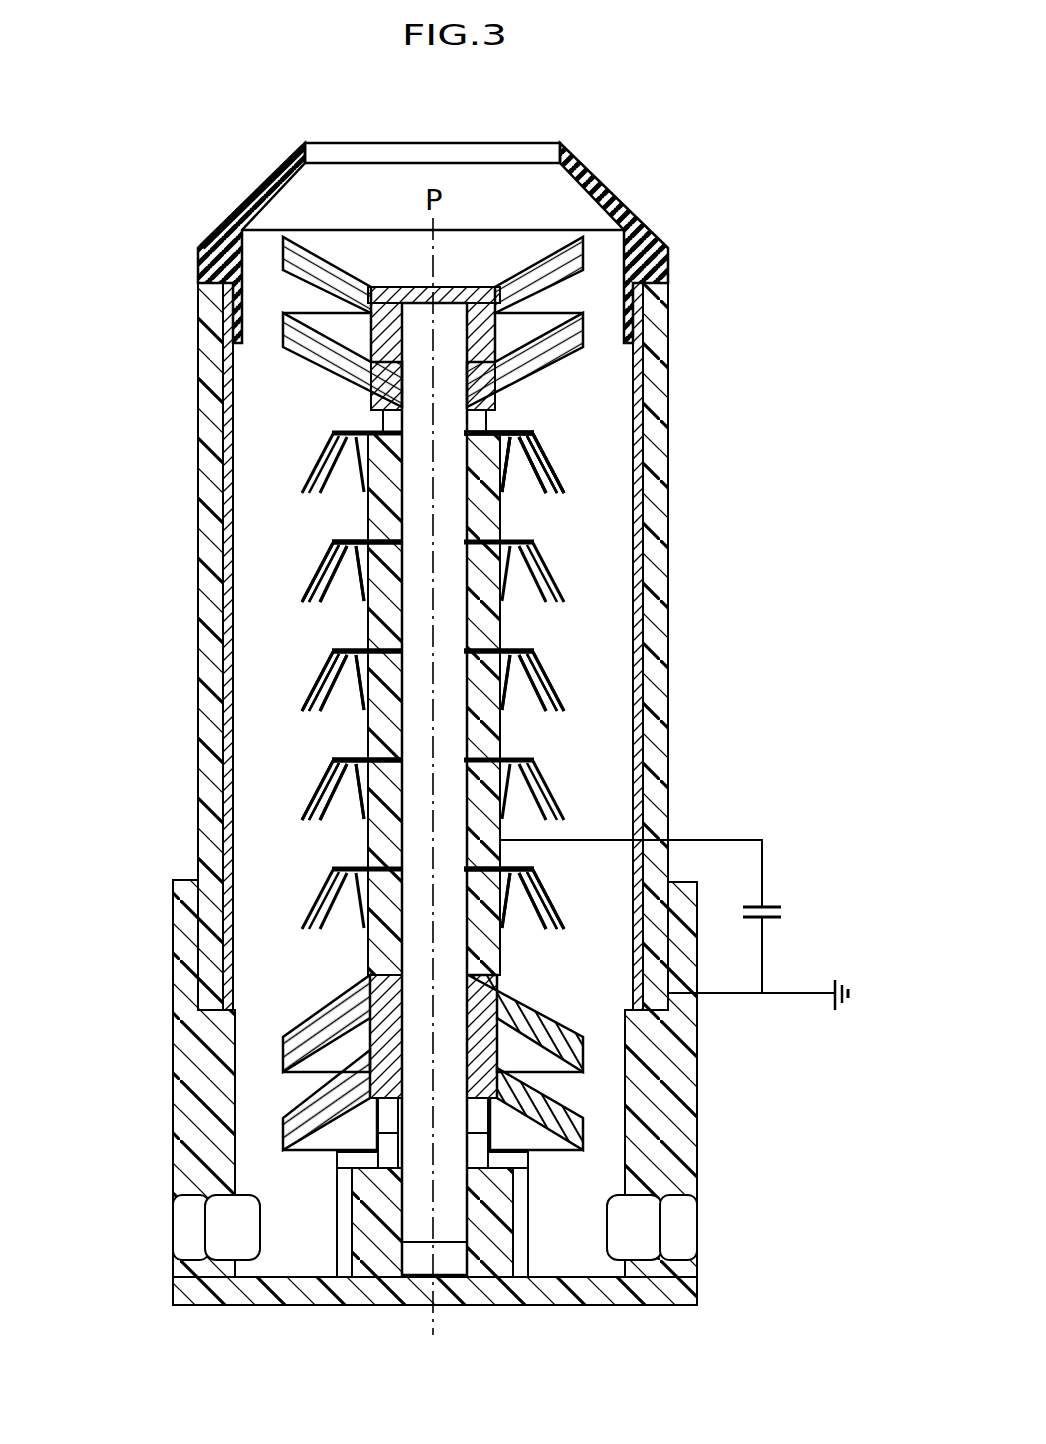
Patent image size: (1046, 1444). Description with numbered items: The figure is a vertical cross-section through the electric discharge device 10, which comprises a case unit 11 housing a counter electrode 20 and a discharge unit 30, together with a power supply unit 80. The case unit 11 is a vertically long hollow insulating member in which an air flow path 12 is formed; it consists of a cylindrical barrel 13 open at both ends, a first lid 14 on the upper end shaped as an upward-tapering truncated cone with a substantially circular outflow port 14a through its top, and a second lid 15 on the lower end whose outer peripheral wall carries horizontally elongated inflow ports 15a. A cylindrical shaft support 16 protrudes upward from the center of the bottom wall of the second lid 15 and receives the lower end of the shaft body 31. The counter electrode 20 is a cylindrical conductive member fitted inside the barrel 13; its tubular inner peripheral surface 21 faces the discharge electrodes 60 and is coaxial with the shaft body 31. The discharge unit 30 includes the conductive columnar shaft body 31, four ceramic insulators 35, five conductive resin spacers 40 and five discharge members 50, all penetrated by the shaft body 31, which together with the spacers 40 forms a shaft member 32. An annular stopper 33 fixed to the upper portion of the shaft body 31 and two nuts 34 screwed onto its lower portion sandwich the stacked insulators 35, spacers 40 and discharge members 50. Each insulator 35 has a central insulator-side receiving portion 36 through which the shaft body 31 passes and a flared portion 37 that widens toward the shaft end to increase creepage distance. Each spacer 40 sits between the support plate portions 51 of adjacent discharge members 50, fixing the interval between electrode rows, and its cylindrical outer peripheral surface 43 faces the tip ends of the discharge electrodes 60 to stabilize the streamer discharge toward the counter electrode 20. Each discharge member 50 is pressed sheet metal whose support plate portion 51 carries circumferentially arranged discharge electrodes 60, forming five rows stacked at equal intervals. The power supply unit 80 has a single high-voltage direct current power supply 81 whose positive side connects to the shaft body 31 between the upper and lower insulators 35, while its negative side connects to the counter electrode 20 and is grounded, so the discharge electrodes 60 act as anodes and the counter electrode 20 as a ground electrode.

The electric discharge device 10 is at (690, 147).
The case unit 11 is at (688, 433).
The air flow path 12 is at (235, 822).
The barrel 13 is at (645, 628).
The first lid 14 is at (657, 265).
The outflow port 14a is at (433, 160).
The second lid 15 is at (657, 1118).
The inflow port 15a is at (188, 1225).
The shaft support 16 is at (495, 1223).
The counter electrode 20 is at (237, 443).
The inner peripheral surface 21 is at (234, 490).
The discharge unit 30 is at (490, 256).
The shaft body 31 is at (457, 628).
The shaft member 32 is at (585, 700).
The stopper 33 is at (383, 420).
The nut 34 is at (385, 1112).
The insulator 35 is at (279, 258).
The insulator-side receiving portion 36 is at (467, 323).
The flared portion 37 is at (550, 262).
The spacer 40 is at (365, 523).
The outer peripheral surface 43 is at (360, 606).
The discharge member 50 is at (560, 460).
The support plate portion 51 is at (505, 525).
The discharge electrode 60 is at (556, 483).
The power supply unit 80 is at (762, 826).
The power supply 81 is at (770, 905).